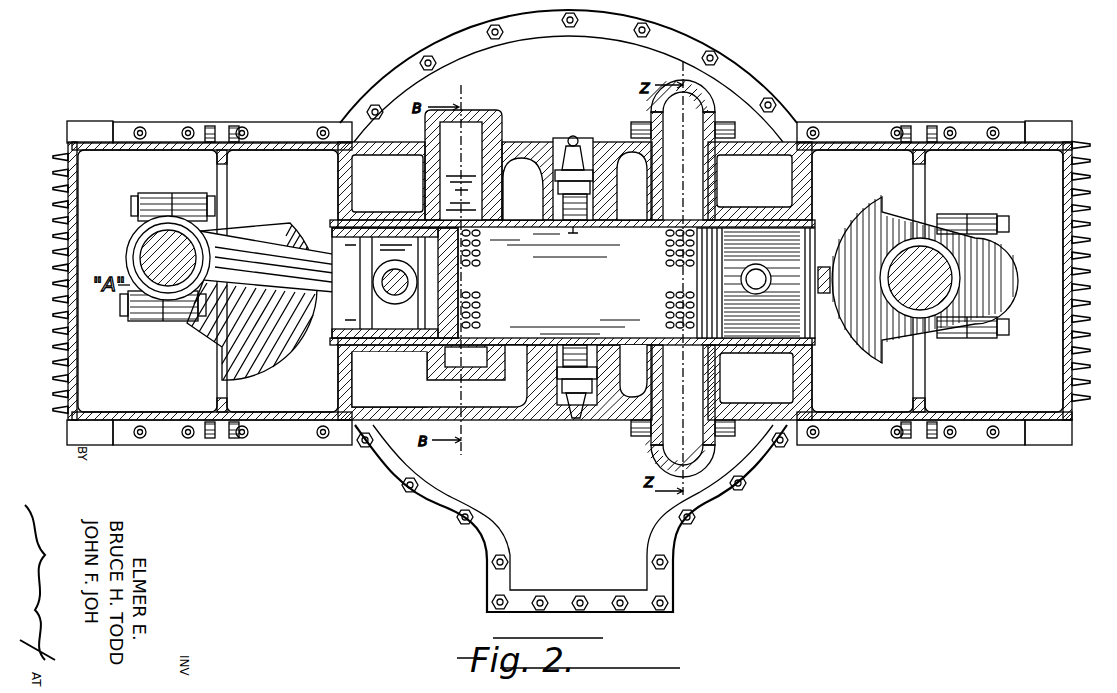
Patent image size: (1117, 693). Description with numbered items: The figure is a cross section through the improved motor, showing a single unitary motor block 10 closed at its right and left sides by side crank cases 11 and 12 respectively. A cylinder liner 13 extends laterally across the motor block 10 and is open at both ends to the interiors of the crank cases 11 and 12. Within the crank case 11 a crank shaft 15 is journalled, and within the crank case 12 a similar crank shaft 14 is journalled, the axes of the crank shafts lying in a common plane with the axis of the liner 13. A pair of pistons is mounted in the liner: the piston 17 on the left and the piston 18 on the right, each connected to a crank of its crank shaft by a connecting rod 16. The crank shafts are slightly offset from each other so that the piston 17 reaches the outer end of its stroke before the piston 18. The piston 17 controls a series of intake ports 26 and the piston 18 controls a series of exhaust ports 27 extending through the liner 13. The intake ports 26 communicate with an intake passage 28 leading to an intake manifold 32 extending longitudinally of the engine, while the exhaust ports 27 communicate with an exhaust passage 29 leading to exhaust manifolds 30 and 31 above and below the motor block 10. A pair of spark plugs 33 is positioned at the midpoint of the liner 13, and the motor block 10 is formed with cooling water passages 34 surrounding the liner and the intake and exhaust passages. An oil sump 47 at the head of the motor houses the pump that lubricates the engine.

The motor block 10 is at (758, 157).
The side crank case 11 is at (1042, 160).
The side crank case 12 is at (80, 395).
The cylinder liner 13 is at (522, 370).
The crank shaft 14 is at (152, 252).
The crank shaft 15 is at (912, 255).
The connecting rod 16 is at (267, 263).
The piston 17 is at (340, 235).
The piston 18 is at (783, 242).
The intake port 26 is at (480, 292).
The exhaust port 27 is at (668, 292).
The intake passage 28 is at (470, 185).
The exhaust passage 29 is at (692, 170).
The exhaust manifold 30 is at (703, 95).
The exhaust manifold 31 is at (655, 458).
The intake manifold 32 is at (480, 112).
The spark plug 33 is at (578, 140).
The cooling water passage 34 is at (368, 165).
The oil sump 47 is at (545, 568).